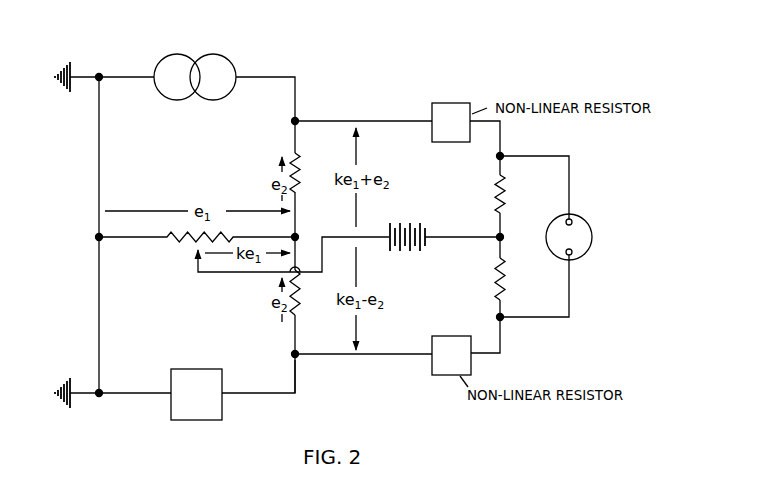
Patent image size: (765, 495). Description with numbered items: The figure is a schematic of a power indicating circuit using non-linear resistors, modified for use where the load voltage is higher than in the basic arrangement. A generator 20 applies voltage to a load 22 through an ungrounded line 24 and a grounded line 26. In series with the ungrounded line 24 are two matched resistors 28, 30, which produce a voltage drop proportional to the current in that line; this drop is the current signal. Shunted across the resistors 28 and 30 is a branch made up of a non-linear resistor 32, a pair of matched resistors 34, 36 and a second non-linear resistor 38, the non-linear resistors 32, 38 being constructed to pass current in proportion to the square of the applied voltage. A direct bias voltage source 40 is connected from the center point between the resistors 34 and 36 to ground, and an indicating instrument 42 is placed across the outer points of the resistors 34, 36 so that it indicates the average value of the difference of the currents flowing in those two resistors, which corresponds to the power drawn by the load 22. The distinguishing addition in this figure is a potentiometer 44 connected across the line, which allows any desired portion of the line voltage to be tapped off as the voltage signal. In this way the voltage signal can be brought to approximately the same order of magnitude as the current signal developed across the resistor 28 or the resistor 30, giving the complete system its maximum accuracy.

The generator 20 is at (233, 62).
The load 22 is at (222, 418).
The ungrounded line 24 is at (296, 391).
The grounded line 26 is at (100, 323).
The resistor 28 is at (298, 161).
The resistor 30 is at (300, 297).
The non-linear resistor 32 is at (459, 104).
The resistor 34 is at (504, 192).
The resistor 36 is at (504, 285).
The second non-linear resistor 38 is at (472, 371).
The direct bias voltage source 40 is at (426, 224).
The indicating instrument 42 is at (585, 222).
The potentiometer 44 is at (170, 243).